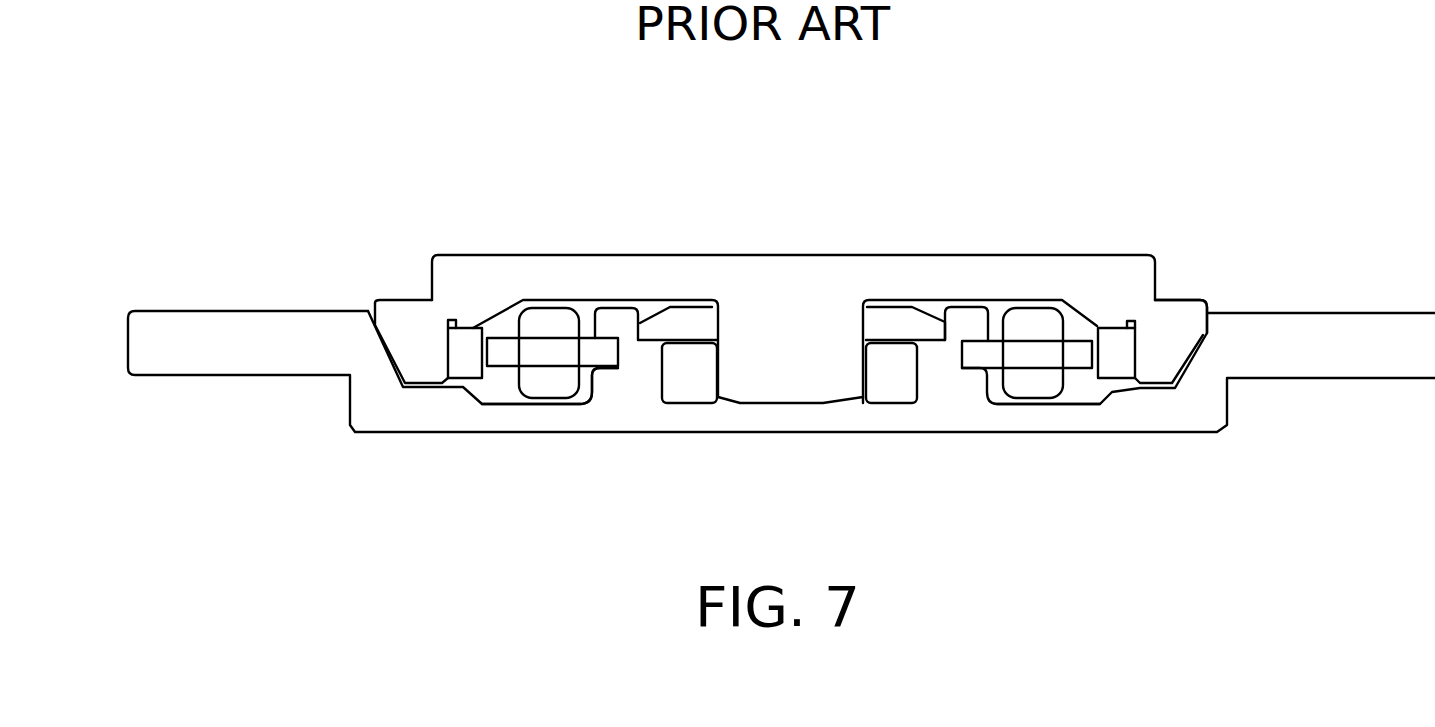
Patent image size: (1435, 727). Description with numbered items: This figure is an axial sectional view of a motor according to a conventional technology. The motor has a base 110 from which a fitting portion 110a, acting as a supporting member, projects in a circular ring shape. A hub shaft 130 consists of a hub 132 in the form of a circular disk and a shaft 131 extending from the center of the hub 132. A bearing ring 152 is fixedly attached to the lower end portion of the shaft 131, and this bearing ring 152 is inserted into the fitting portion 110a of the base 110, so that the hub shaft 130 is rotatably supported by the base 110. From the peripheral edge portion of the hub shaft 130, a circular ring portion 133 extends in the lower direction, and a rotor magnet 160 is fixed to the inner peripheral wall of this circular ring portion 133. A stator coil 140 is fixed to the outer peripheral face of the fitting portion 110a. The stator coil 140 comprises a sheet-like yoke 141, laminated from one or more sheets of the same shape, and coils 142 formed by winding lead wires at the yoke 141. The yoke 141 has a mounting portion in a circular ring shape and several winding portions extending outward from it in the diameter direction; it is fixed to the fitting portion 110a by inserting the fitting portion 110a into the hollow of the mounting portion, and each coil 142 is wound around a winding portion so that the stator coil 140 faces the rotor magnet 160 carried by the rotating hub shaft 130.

The base 110 is at (1332, 311).
The fitting portion 110a is at (935, 380).
The hub shaft 130 is at (933, 265).
The shaft 131 is at (807, 392).
The hub 132 is at (1188, 310).
The circular ring portion 133 is at (1162, 363).
The stator coil 140 is at (513, 382).
The yoke 141 is at (598, 350).
The coil 142 is at (552, 327).
The bearing ring 152 is at (882, 393).
The rotor magnet 160 is at (460, 365).